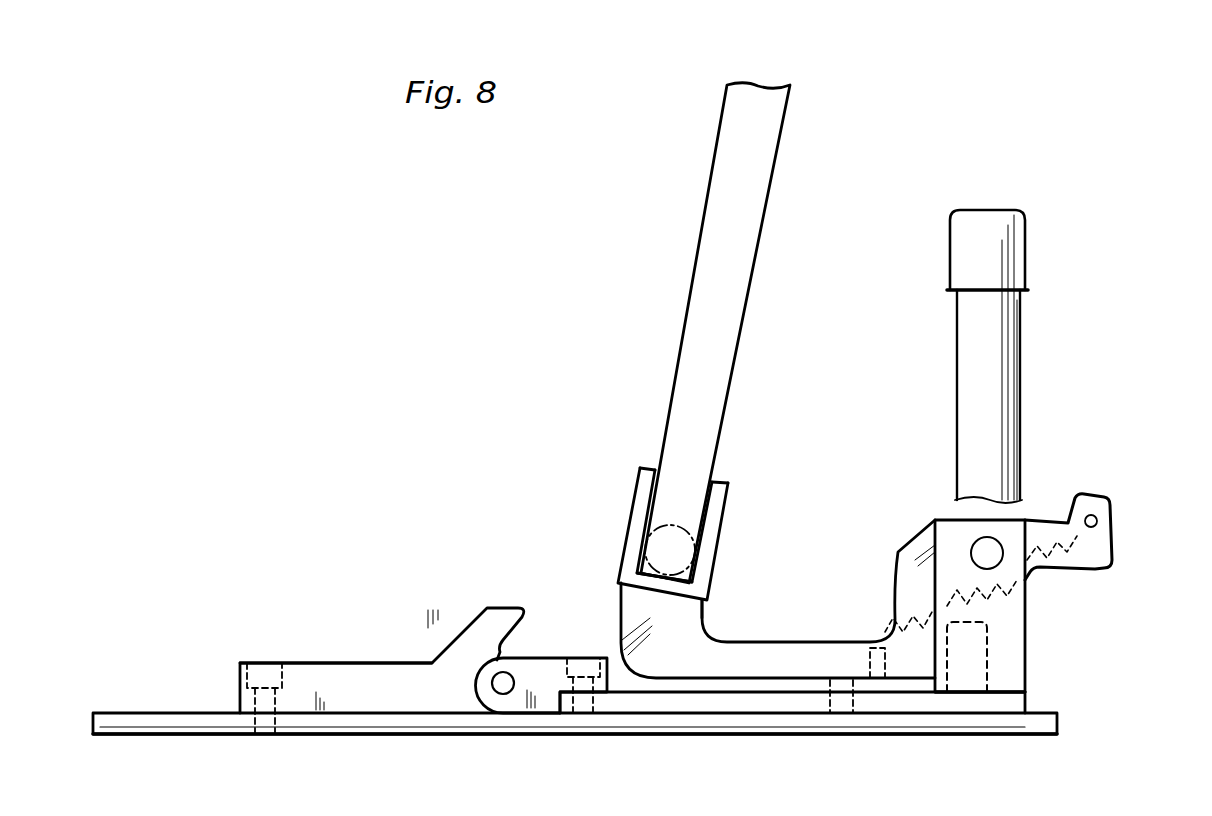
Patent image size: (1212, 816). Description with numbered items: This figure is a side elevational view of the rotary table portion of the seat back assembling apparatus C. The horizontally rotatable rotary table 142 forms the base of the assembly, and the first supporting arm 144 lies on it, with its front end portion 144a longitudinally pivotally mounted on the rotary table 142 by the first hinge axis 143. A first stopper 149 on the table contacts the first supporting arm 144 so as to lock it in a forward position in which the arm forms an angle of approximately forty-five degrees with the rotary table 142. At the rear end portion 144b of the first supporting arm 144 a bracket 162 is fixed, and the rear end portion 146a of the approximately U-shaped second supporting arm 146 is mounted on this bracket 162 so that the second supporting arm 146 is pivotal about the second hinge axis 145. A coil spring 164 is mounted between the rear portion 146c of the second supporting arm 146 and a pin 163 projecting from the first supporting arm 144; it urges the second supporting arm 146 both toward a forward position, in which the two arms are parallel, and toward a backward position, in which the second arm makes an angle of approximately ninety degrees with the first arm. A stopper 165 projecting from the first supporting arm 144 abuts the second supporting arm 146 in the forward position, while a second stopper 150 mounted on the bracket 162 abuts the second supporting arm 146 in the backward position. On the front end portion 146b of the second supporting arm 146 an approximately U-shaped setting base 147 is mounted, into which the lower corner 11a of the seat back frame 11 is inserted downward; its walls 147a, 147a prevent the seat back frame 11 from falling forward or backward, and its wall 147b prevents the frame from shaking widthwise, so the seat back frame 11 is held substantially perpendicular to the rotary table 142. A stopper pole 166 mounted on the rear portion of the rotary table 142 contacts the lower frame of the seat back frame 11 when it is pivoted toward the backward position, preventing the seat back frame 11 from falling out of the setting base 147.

The seat back frame 11 is at (780, 133).
The lower corner of the seat back frame 11a is at (650, 538).
The setting base 147 is at (722, 515).
The walls of the setting base 147a is at (640, 490).
The wall of the setting base 147b is at (655, 556).
The second supporting arm 146 is at (818, 660).
The rear end portion of the second supporting arm 146a is at (1096, 573).
The front end portion of the second supporting arm 146b is at (700, 620).
The rear portion of the second supporting arm 146c is at (1108, 515).
The bracket 162 is at (1012, 632).
The second hinge axis 145 is at (990, 550).
The stopper pole 166 is at (1018, 240).
The coil spring 164 is at (965, 595).
The pin 163 is at (880, 640).
The second stopper 150 is at (975, 678).
The stopper 165 is at (845, 686).
The first supporting arm 144 is at (760, 700).
The front end portion of the first supporting arm 144a is at (552, 693).
The rear end portion of the first supporting arm 144b is at (1013, 705).
The rotary table 142 is at (888, 725).
The first hinge axis 143 is at (503, 694).
The first stopper 149 is at (468, 638).
The seat back assembling apparatus C is at (372, 658).